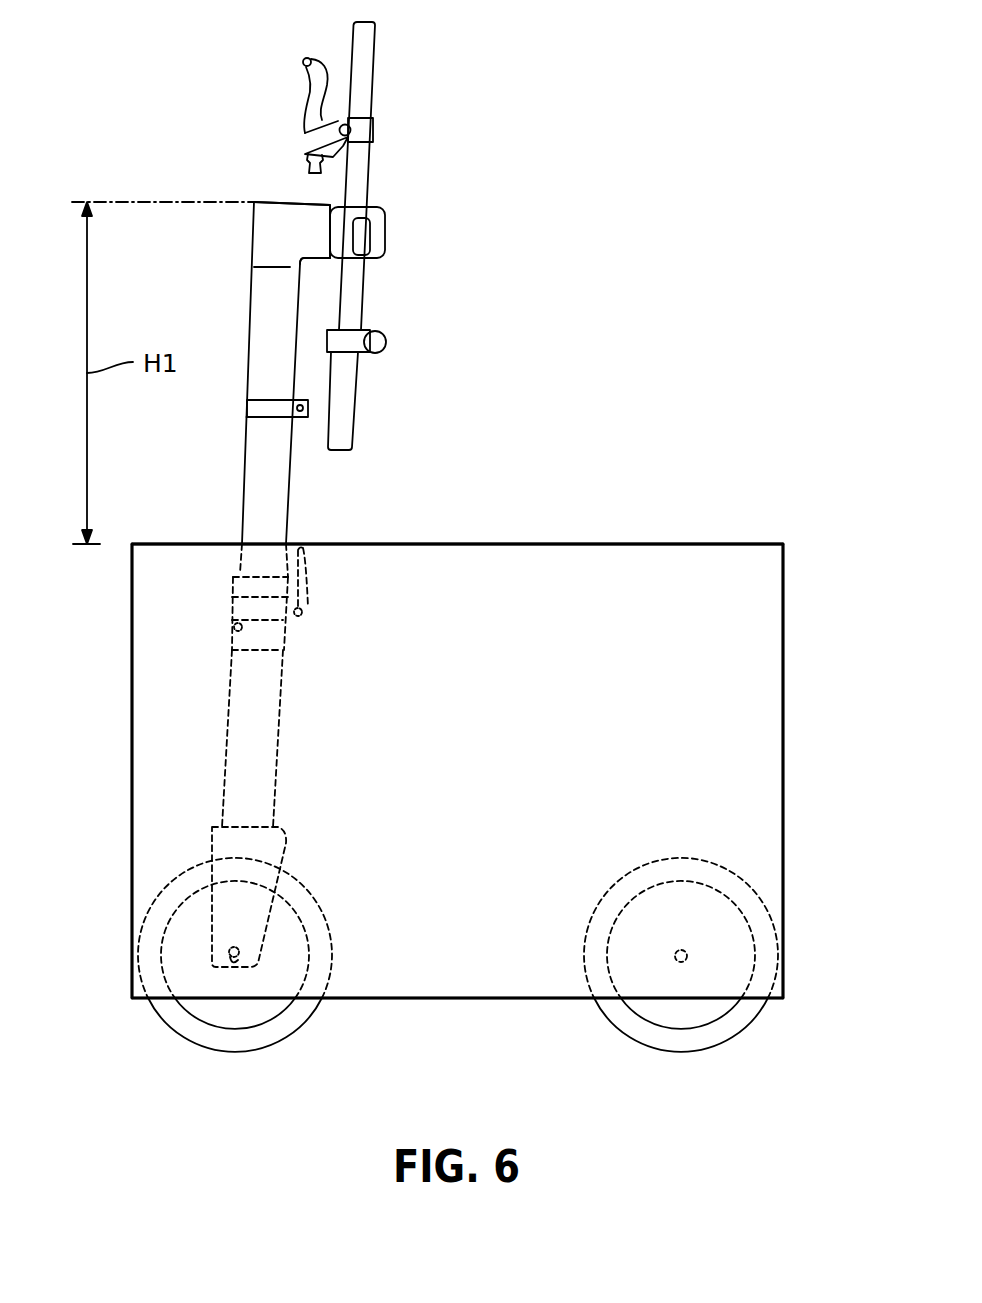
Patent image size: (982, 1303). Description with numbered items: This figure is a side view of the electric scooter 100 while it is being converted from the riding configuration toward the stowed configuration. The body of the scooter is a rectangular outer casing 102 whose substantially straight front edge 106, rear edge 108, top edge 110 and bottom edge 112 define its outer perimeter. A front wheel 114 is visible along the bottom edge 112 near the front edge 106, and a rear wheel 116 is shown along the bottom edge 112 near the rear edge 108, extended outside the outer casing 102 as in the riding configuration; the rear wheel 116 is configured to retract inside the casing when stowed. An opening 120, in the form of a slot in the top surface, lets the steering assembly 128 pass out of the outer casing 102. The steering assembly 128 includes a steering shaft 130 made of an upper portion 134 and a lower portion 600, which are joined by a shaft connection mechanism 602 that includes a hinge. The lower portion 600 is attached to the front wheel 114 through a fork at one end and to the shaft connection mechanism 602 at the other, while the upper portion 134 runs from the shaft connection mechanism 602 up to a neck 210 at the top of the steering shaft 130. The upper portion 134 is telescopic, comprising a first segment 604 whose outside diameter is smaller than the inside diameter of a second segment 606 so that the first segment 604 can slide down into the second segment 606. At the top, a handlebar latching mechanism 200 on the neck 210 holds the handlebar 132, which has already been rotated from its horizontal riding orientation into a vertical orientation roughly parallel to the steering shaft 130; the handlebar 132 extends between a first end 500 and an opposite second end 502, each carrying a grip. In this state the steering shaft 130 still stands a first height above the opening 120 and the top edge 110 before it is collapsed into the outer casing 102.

The electric scooter 100 is at (612, 386).
The outer casing 102 is at (748, 703).
The front edge 106 is at (132, 727).
The rear edge 108 is at (783, 846).
The top edge 110 is at (593, 544).
The bottom edge 112 is at (465, 998).
The front wheel 114 is at (225, 1053).
The rear wheel 116 is at (682, 1053).
The opening 120 is at (504, 527).
The steering assembly 128 is at (248, 170).
The steering shaft 130 is at (230, 335).
The handlebar 132 is at (368, 182).
The upper portion 134 is at (268, 300).
The handlebar latching mechanism 200 is at (404, 246).
The neck 210 is at (283, 200).
The first end 500 is at (375, 70).
The second end 502 is at (358, 405).
The lower portion 600 is at (280, 725).
The shaft connection mechanism 602 is at (307, 614).
The first segment 604 is at (265, 385).
The second segment 606 is at (258, 470).